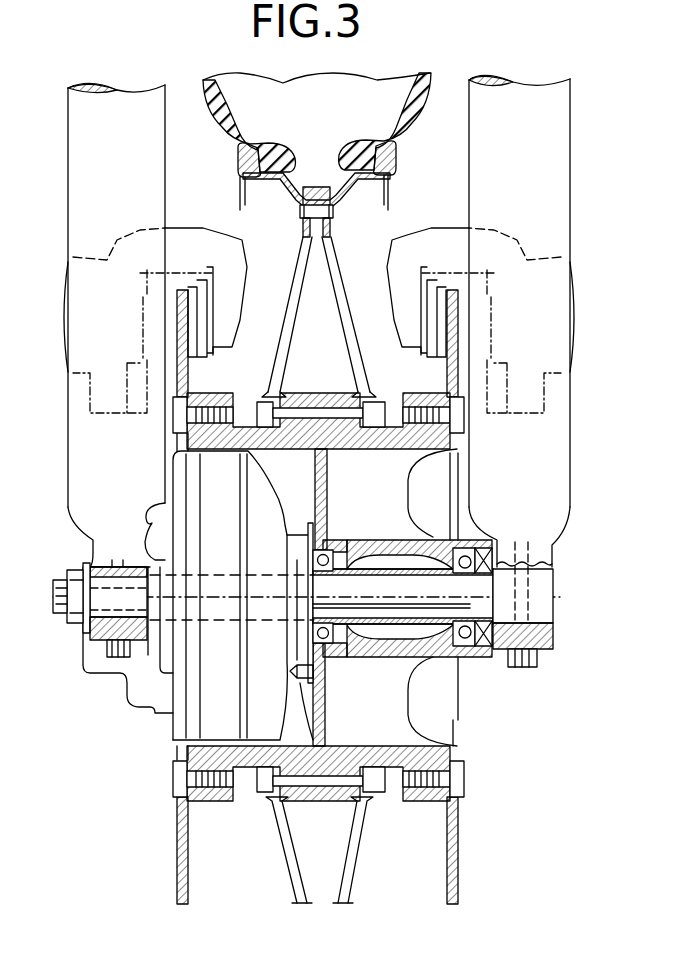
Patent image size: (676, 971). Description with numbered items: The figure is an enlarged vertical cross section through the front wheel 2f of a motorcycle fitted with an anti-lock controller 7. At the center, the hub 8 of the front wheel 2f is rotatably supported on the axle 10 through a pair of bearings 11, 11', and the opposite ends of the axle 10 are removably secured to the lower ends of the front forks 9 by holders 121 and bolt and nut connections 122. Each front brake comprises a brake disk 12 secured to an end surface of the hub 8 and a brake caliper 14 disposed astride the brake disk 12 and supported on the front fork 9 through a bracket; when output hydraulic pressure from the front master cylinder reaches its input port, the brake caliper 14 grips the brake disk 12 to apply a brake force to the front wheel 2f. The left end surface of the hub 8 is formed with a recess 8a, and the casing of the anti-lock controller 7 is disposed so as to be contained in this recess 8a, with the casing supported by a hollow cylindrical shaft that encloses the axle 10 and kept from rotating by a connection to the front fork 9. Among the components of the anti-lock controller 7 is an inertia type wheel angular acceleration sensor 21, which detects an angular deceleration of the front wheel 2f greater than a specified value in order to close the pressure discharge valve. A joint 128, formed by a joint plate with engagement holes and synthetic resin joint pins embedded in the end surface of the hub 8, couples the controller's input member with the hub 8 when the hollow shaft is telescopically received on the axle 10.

The front fork 9 is at (165, 120).
The front wheel 2f is at (396, 159).
The brake caliper 14 is at (226, 237).
The brake disk 12 is at (183, 290).
The hub 8 is at (317, 394).
The recess 8a is at (305, 485).
The anti-lock controller 7 is at (170, 472).
The wheel angular acceleration sensor 21 is at (232, 515).
The axle 10 is at (408, 603).
The bearing 11 is at (296, 602).
The bearing 11' is at (462, 616).
The holder 121 is at (88, 645).
The bolt and nut connection 122 is at (117, 658).
The joint 128 is at (300, 692).